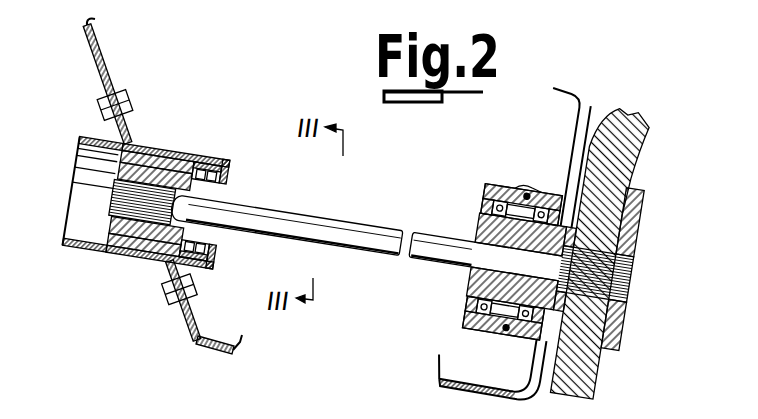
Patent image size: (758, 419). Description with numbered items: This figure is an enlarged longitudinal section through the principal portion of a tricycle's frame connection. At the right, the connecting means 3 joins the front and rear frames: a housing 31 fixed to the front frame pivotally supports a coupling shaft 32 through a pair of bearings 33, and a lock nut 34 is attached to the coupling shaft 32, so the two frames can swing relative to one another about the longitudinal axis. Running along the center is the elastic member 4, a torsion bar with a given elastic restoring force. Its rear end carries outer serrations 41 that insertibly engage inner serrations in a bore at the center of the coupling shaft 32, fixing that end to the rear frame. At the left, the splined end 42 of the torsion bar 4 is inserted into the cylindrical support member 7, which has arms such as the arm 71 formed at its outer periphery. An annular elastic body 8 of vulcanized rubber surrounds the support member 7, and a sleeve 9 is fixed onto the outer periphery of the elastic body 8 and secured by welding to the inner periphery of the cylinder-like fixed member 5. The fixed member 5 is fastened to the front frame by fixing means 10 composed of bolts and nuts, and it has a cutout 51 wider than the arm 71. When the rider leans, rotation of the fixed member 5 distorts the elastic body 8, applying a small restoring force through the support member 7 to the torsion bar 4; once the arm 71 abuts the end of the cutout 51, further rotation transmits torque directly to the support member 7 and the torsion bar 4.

The connecting means 3 is at (494, 183).
The elastic member 4 is at (360, 231).
The fixed member 5 is at (190, 150).
The support member 7 is at (112, 226).
The elastic body 8 is at (123, 250).
The sleeve 9 is at (147, 260).
The fixing means 10 is at (164, 308).
The housing 31 is at (514, 183).
The coupling shaft 32 is at (627, 238).
The bearings 33 is at (470, 310).
The lock nut 34 is at (488, 207).
The outer serrations 41 is at (628, 292).
The splined end 42 is at (152, 148).
The cutout 51 is at (228, 164).
The arm 71 is at (232, 178).